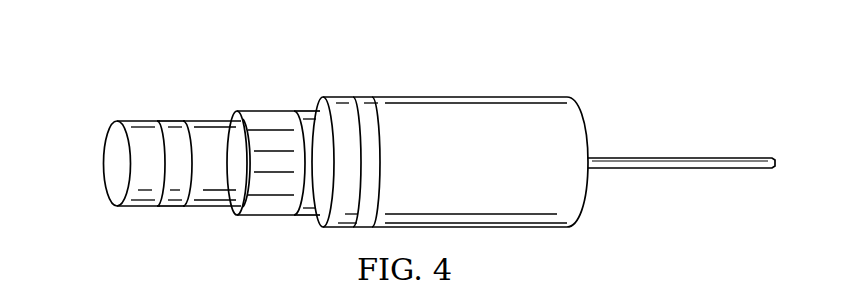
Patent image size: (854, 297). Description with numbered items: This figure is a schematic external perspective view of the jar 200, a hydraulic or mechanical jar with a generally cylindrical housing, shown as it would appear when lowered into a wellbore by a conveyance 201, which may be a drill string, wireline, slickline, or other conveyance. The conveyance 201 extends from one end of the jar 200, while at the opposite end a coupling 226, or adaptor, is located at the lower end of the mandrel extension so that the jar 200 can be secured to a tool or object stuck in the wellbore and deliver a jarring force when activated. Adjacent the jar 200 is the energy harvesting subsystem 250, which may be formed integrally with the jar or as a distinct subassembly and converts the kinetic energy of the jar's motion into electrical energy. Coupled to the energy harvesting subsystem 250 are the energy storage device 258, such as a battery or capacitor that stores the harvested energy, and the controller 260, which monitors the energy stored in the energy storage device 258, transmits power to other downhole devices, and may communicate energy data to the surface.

The jar 200 is at (443, 97).
The conveyance 201 is at (680, 157).
The coupling 226 is at (110, 162).
The energy harvesting subsystem 250 is at (270, 114).
The energy storage device 258 is at (217, 120).
The controller 260 is at (170, 120).